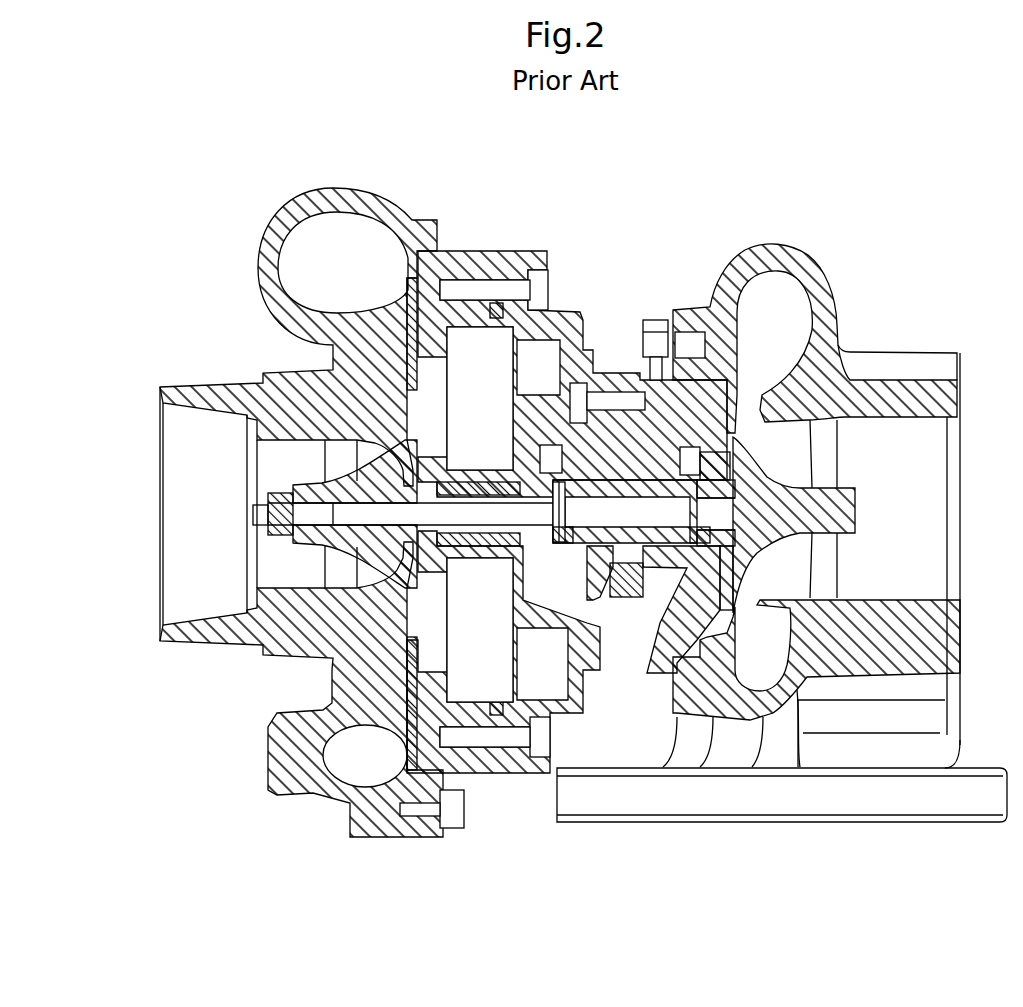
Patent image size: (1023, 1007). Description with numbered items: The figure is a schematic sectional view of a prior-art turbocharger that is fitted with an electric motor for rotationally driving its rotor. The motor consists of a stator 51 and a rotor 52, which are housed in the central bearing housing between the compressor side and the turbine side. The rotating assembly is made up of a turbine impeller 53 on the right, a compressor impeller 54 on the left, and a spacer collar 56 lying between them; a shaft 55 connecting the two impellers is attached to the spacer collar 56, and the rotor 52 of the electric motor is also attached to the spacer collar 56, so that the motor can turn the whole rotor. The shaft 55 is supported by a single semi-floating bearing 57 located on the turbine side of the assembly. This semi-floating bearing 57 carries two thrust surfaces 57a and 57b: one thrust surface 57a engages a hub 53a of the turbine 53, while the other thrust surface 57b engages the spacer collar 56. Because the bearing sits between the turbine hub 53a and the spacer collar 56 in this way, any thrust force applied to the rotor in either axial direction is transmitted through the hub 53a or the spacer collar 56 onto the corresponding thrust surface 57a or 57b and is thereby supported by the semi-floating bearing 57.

The stator 51 is at (497, 388).
The rotor 52 is at (468, 547).
The turbine impeller 53 is at (773, 497).
The hub 53a is at (703, 470).
The compressor impeller 54 is at (322, 486).
The shaft 55 is at (570, 510).
The spacer collar 56 is at (463, 487).
The semi-floating bearing 57 is at (622, 488).
The thrust surface 57a is at (727, 532).
The thrust surface 57b is at (537, 550).